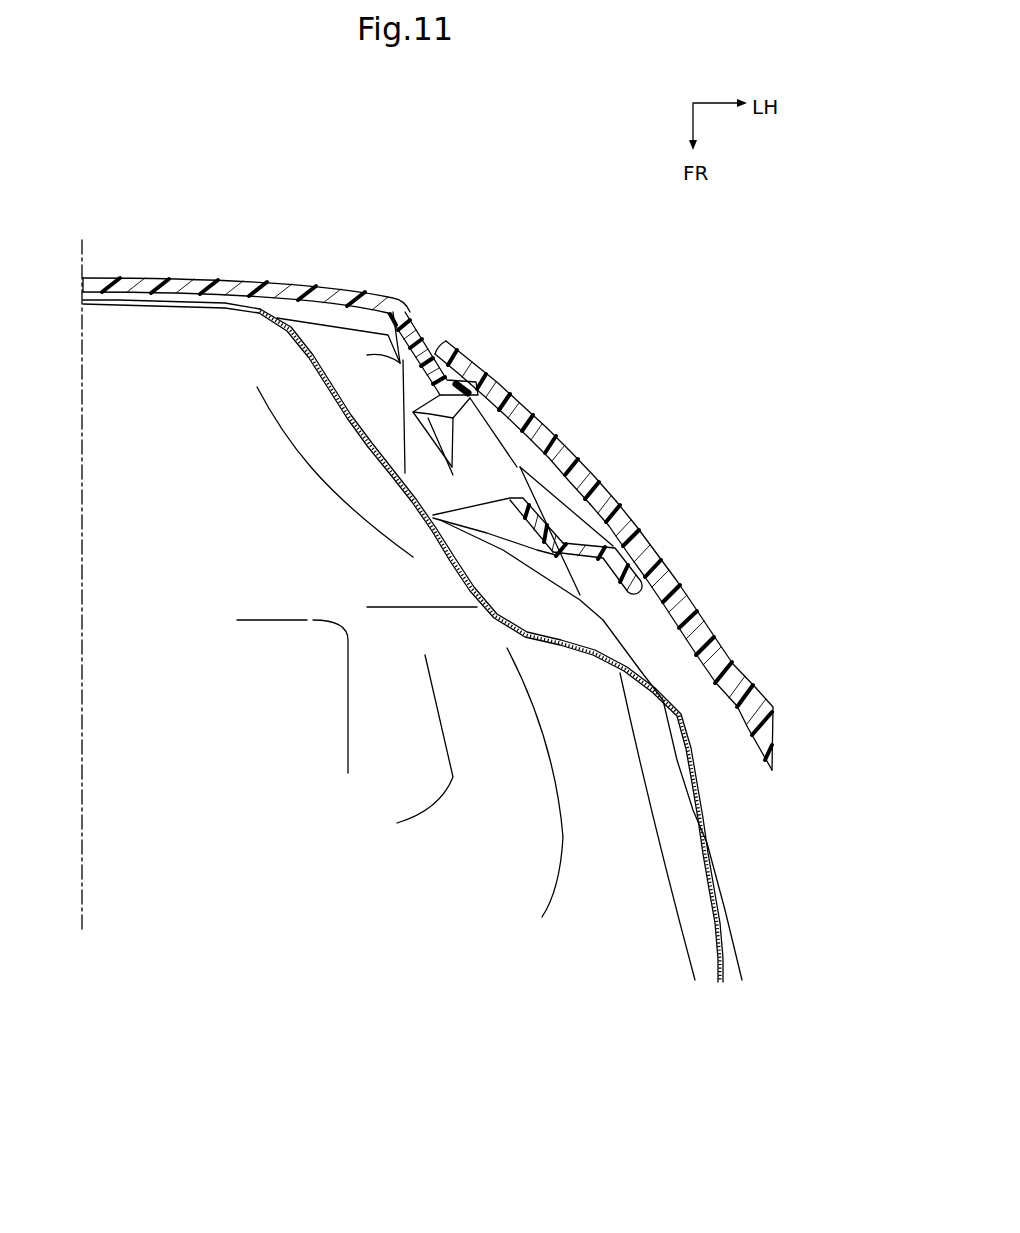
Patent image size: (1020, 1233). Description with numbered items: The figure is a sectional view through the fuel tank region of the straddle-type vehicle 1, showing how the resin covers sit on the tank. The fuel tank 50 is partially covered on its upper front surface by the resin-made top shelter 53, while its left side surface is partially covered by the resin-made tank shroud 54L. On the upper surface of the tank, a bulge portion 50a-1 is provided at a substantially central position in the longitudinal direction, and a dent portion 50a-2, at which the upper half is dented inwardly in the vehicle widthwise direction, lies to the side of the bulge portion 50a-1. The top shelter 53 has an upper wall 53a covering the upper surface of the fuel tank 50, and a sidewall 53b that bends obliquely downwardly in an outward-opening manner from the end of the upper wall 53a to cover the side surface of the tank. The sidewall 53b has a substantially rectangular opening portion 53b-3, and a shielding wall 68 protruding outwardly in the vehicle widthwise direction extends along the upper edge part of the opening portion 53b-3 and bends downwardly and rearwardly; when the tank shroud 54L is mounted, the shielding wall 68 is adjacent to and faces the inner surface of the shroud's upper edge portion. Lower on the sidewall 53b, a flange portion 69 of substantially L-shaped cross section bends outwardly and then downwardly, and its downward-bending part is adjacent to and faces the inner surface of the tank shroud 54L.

The straddle-type vehicle 1 is at (417, 228).
The fuel tank 50 is at (271, 306).
The bulge portion 50a-1 is at (125, 299).
The dent portion 50a-2 is at (455, 578).
The top shelter 53 is at (185, 268).
The upper wall 53a is at (318, 291).
The sidewall 53b is at (423, 338).
The opening portion 53b-3 is at (455, 477).
The tank shroud 54L is at (688, 579).
The shielding wall 68 is at (480, 385).
The flange portion 69 is at (615, 563).